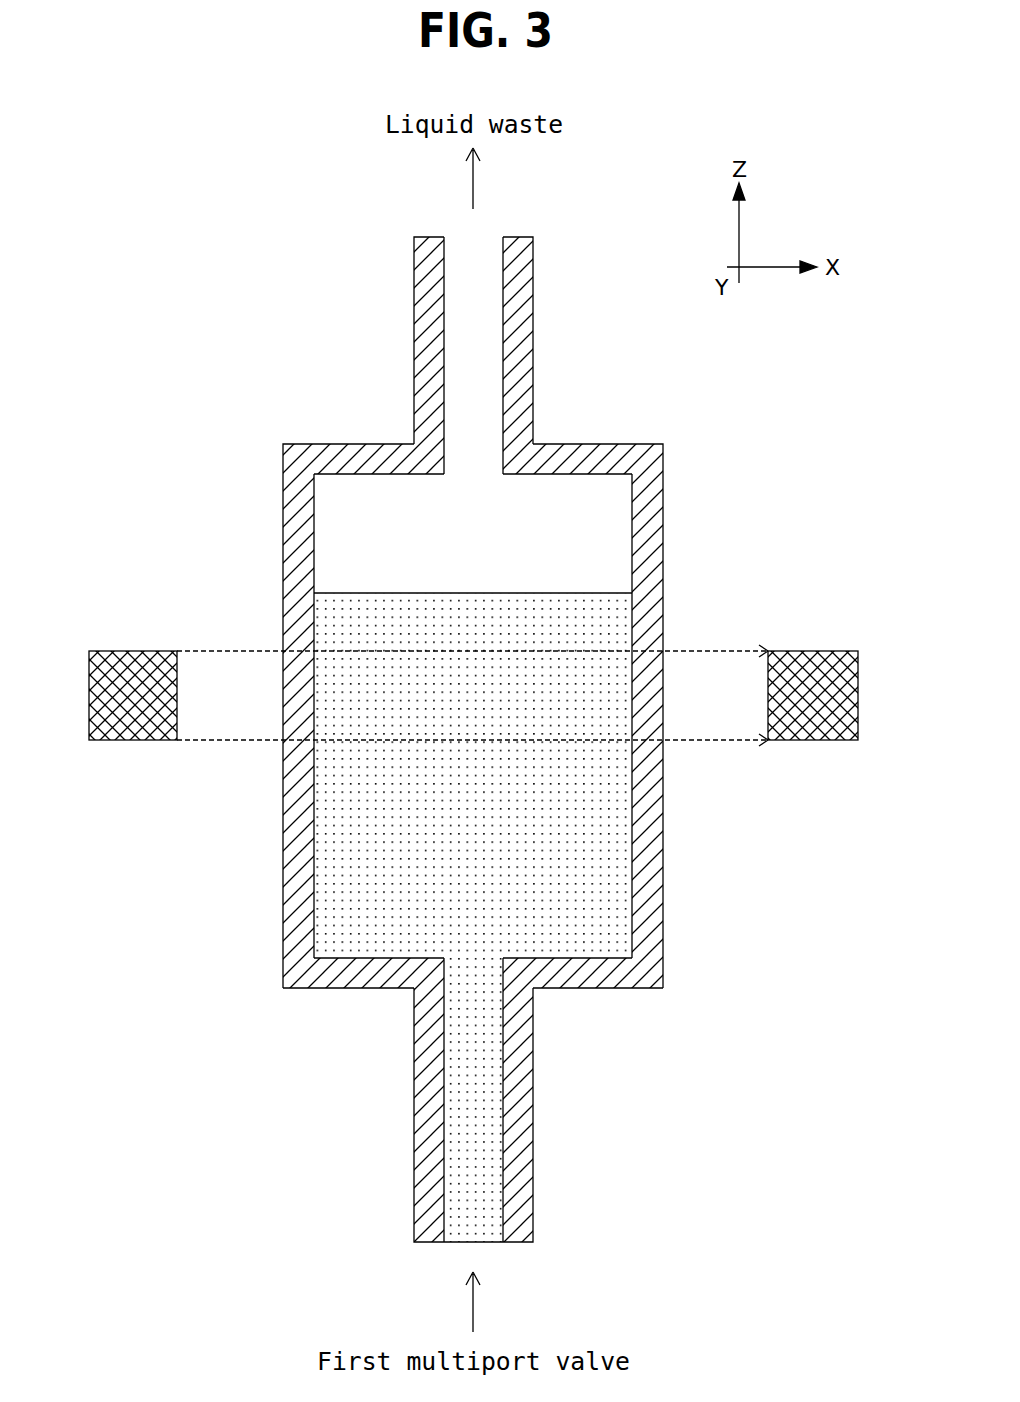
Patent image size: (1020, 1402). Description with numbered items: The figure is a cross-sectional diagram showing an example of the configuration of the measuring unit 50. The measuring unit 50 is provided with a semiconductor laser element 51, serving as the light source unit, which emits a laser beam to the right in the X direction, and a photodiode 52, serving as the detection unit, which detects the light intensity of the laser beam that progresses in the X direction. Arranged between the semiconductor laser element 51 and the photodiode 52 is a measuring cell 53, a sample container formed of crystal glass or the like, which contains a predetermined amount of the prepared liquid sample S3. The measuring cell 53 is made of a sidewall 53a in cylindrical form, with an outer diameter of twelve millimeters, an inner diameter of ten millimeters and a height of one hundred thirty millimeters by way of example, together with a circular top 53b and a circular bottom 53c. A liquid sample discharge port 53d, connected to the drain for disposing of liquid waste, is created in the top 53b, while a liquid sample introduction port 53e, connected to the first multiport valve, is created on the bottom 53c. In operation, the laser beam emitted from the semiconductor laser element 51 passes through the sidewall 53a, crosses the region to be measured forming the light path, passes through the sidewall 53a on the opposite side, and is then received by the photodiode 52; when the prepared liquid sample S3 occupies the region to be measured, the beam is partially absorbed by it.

The measuring unit 50 is at (260, 261).
The semiconductor laser element 51 is at (133, 651).
The photodiode 52 is at (812, 651).
The measuring cell 53 is at (247, 955).
The sidewall 53a is at (283, 830).
The top 53b is at (585, 473).
The bottom 53c is at (367, 958).
The liquid sample discharge port 53d is at (413, 355).
The liquid sample introduction port 53e is at (533, 1087).
The prepared liquid sample S3 is at (592, 858).